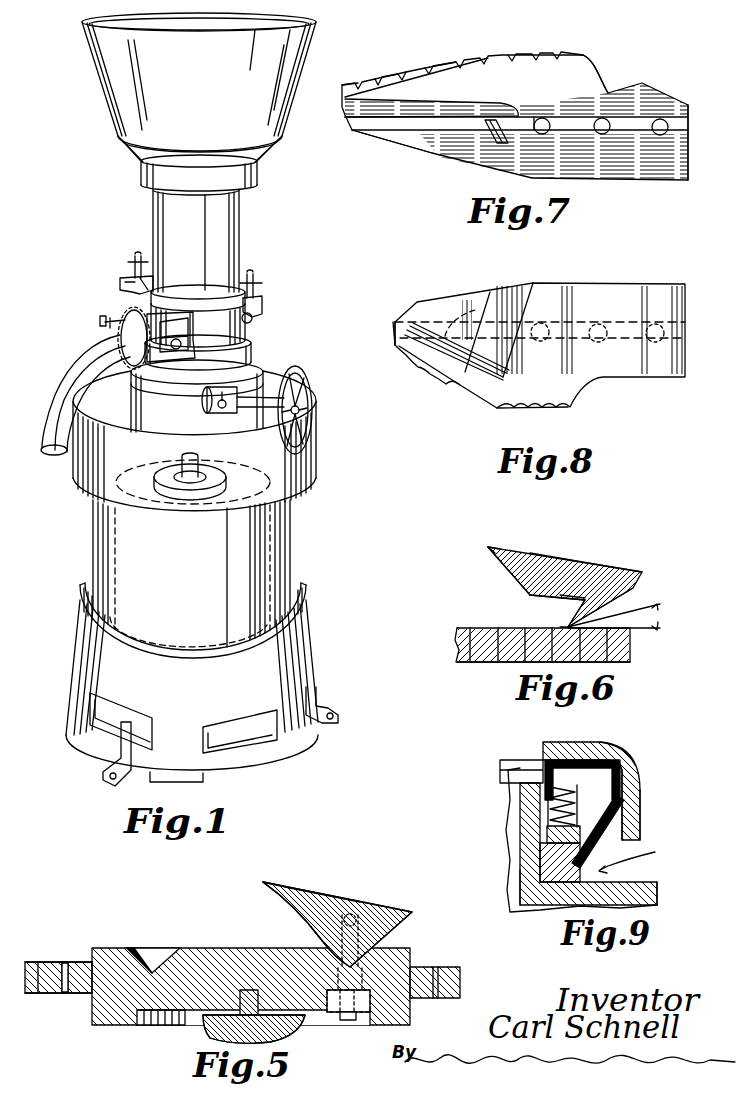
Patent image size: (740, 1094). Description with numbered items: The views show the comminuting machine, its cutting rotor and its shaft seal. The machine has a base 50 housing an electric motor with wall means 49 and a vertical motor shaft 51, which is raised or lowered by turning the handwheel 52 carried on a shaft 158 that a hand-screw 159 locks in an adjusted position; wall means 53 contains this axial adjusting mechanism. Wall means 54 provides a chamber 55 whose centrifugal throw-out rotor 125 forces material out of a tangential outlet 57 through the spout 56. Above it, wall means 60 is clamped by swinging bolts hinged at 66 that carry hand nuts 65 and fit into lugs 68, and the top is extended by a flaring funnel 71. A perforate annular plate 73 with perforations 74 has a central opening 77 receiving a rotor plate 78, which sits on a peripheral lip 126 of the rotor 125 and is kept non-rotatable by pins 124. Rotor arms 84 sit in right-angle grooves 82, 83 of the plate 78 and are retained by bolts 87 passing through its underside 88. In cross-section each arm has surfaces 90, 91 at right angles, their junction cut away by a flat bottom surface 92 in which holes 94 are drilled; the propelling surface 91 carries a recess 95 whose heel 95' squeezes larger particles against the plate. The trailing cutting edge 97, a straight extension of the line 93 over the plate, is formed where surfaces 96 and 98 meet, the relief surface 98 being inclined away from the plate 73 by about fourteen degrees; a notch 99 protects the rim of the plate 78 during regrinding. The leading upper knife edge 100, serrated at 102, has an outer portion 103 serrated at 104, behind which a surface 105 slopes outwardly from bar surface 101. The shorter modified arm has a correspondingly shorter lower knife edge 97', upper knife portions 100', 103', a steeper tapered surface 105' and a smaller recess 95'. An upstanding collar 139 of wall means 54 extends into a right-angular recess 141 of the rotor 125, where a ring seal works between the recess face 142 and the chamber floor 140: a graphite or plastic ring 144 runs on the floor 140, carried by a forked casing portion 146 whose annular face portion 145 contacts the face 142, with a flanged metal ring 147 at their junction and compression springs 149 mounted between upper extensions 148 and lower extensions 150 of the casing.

In FIG. 1, the funnel 71 is at (118, 85).
In FIG. 1, the wall means 60 is at (222, 222).
In FIG. 1, the hand nuts 65 is at (138, 255).
In FIG. 1, the lugs 68 is at (125, 283).
In FIG. 1, the tangential outlet 57 is at (128, 320).
In FIG. 1, the hinge 66 is at (253, 318).
In FIG. 1, the wall means 54 is at (248, 337).
In FIG. 1, the spout 56 is at (70, 362).
In FIG. 1, the handwheel 52 is at (306, 378).
In FIG. 1, the shaft 158 is at (312, 410).
In FIG. 1, the hand-screw 159 is at (222, 410).
In FIG. 1, the wall means 53 is at (186, 410).
In FIG. 1, the wall means 49 is at (118, 492).
In FIG. 1, the motor shaft 51 is at (192, 490).
In FIG. 1, the base 50 is at (100, 550).
In FIG. 7, the surface 90 is at (616, 160).
In FIG. 6, the surface 90 is at (645, 582).
In FIG. 5, the surface 90 is at (414, 914).
In FIG. 7, the cutting edge 97 is at (431, 98).
In FIG. 6, the cutting edge 97 is at (517, 615).
In FIG. 7, the relief surface 98 is at (397, 126).
In FIG. 6, the relief surface 98 is at (618, 617).
In FIG. 7, the notch 99 is at (498, 140).
In FIG. 7, the holes 94 is at (604, 119).
In FIG. 7, the straight line 93 is at (558, 118).
In FIG. 7, the bottom surface 92 is at (689, 132).
In FIG. 5, the bottom surface 92 is at (340, 1013).
In FIG. 7, the serrations 104 is at (382, 78).
In FIG. 6, the serrations 104 is at (488, 553).
In FIG. 7, the rotor arms 84 is at (398, 71).
In FIG. 6, the rotor arms 84 is at (556, 565).
In FIG. 5, the rotor arms 84 is at (322, 892).
In FIG. 7, the outer knife edge portion 103 is at (447, 51).
In FIG. 6, the outer knife edge portion 103 is at (474, 530).
In FIG. 7, the propelling surface 91 is at (466, 85).
In FIG. 6, the propelling surface 91 is at (522, 571).
In FIG. 5, the propelling surface 91 is at (312, 941).
In FIG. 7, the upper inner knife edge 100 is at (545, 40).
In FIG. 5, the upper inner knife edge 100 is at (270, 870).
In FIG. 7, the serrations 102 is at (551, 47).
In FIG. 8, the tapered surface 105' is at (540, 335).
In FIG. 8, the lower knife edge 97' is at (468, 318).
In FIG. 8, the heel of recess 95' is at (382, 353).
In FIG. 6, the heel of recess 95' is at (581, 556).
In FIG. 8, the upper knife portion 103' is at (429, 385).
In FIG. 8, the upper knife portion 100' is at (532, 422).
In FIG. 6, the surface 105 is at (616, 551).
In FIG. 6, the recess 95 is at (537, 595).
In FIG. 6, the surface 96 is at (578, 618).
In FIG. 6, the perforate annular plate 73 is at (615, 656).
In FIG. 5, the perforate annular plate 73 is at (52, 993).
In FIG. 6, the perforations 74 is at (480, 664).
In FIG. 5, the perforations 74 is at (64, 963).
In FIG. 9, the collar 139 is at (520, 799).
In FIG. 9, the ring 144 is at (527, 872).
In FIG. 9, the upper extensions 148 is at (543, 750).
In FIG. 9, the face 142 is at (600, 735).
In FIG. 9, the annular face portion 145 is at (620, 744).
In FIG. 9, the throw-out rotor 125 is at (640, 818).
In FIG. 9, the flanged metal ring 147 is at (622, 777).
In FIG. 9, the casing portion 146 is at (625, 804).
In FIG. 9, the compression springs 149 is at (550, 812).
In FIG. 9, the lower extensions 150 is at (548, 834).
In FIG. 9, the recess 141 is at (590, 857).
In FIG. 9, the chamber 55 is at (643, 858).
In FIG. 9, the floor 140 is at (650, 884).
In FIG. 5, the rotor plate 78 is at (205, 957).
In FIG. 5, the groove 83 is at (153, 968).
In FIG. 5, the central opening 77 is at (420, 1000).
In FIG. 5, the pins 124 is at (244, 990).
In FIG. 5, the peripheral lip 126 is at (130, 1026).
In FIG. 5, the underside 88 is at (192, 1025).
In FIG. 5, the groove 82 is at (348, 1020).
In FIG. 5, the bar surface 101 is at (352, 912).
In FIG. 5, the bolts 87 is at (372, 904).